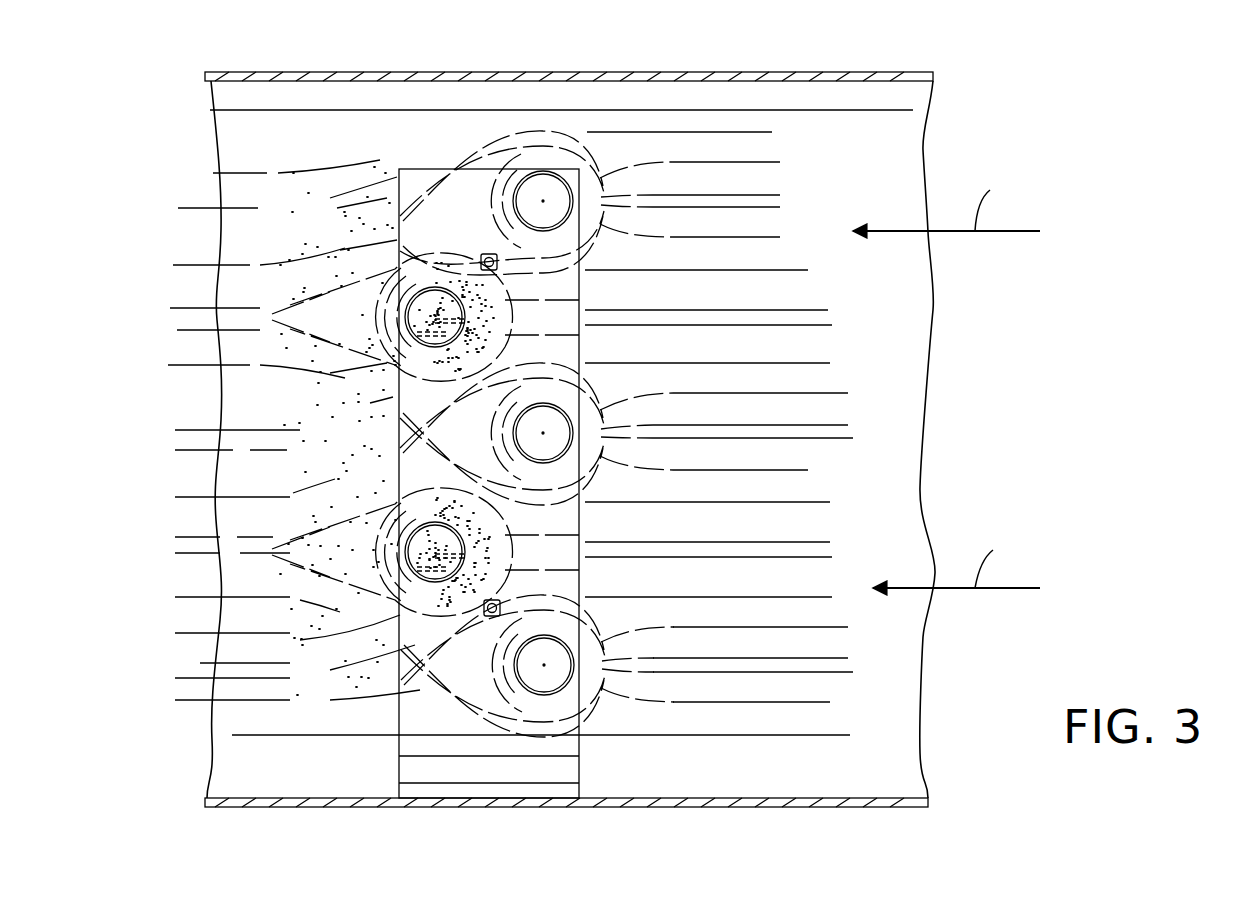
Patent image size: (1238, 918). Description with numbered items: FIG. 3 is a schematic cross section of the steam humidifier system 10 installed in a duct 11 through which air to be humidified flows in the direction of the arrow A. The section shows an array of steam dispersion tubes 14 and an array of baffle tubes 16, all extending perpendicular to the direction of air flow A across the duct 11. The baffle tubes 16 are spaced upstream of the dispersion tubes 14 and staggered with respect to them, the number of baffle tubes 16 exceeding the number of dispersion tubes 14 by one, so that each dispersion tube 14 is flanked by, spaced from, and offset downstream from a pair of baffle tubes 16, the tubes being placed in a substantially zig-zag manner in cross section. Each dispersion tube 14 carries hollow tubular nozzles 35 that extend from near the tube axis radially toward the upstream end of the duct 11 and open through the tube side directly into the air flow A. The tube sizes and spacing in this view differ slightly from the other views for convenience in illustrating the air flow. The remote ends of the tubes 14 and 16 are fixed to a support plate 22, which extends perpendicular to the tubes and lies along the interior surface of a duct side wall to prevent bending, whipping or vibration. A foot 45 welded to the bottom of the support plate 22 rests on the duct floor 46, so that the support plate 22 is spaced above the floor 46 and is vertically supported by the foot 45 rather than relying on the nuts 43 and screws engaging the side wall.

The steam humidifier system 10 is at (473, 430).
The duct 11 is at (933, 130).
The steam dispersion tube 14 is at (418, 298).
The baffle tube 16 is at (533, 172).
The support plate 22 is at (447, 168).
The hollow tubular nozzle 35 is at (443, 548).
The nut 43 is at (483, 253).
The foot 45 is at (550, 792).
The duct floor 46 is at (707, 808).
The air flow direction A is at (946, 379).